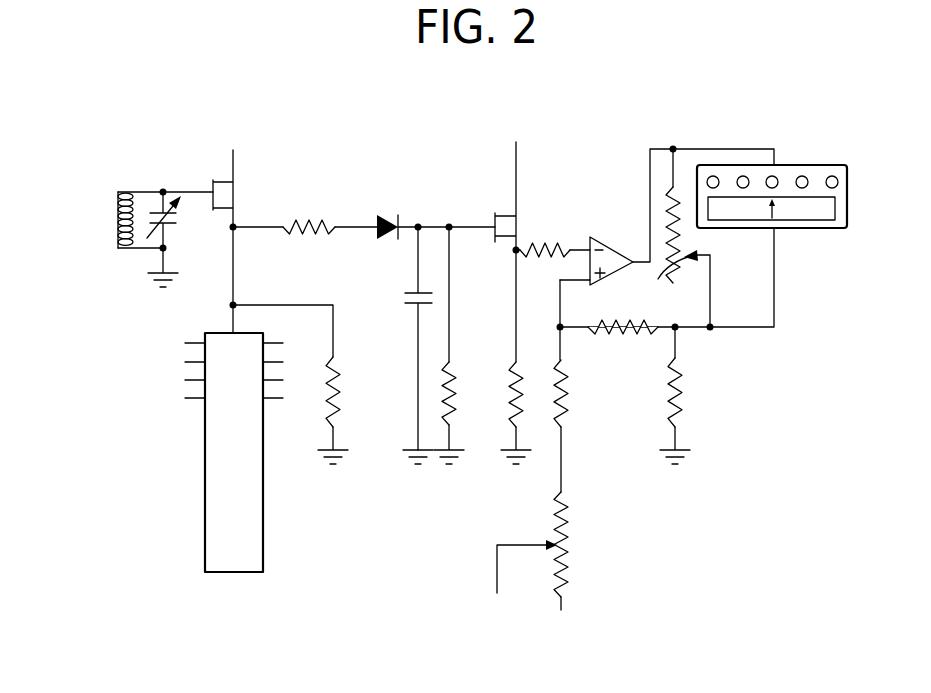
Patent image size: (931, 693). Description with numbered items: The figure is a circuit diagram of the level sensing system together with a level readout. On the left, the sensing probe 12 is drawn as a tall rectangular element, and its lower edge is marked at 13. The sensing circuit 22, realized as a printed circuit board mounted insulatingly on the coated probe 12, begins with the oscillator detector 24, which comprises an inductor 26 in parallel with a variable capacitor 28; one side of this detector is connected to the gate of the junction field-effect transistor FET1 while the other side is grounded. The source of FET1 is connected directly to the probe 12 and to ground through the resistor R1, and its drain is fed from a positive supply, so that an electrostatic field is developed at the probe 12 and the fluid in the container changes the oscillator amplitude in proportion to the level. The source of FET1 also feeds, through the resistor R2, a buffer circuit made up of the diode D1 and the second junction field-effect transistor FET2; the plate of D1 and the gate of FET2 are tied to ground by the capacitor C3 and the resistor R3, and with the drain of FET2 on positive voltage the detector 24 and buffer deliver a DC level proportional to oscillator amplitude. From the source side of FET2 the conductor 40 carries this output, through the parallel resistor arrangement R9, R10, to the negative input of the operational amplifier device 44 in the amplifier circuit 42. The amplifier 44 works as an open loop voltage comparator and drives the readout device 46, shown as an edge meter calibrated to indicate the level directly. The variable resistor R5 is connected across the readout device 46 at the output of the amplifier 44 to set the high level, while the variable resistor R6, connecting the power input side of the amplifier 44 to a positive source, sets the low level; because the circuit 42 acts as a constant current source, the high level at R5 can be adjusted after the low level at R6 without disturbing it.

The sensing probe 12 is at (196, 426).
The probe housing edge 13 is at (265, 532).
The sensing circuit 22 is at (378, 170).
The oscillator detector 24 is at (126, 176).
The inductor 26 is at (118, 243).
The variable capacitor 28 is at (172, 226).
The conductor 40 is at (525, 258).
The amplifier circuit 42 is at (662, 133).
The operational amplifier device 44 is at (611, 247).
The readout device 46 is at (795, 164).
The junction field-effect transistor FET1 is at (235, 200).
The junction field-effect transistor FET2 is at (500, 236).
The diode D1 is at (385, 213).
The capacitor C3 is at (412, 291).
The resistor R1 is at (346, 381).
The resistor R2 is at (305, 206).
The resistor R3 is at (452, 368).
The variable resistor R5 is at (673, 283).
The variable resistor R6 is at (572, 553).
The resistor R9 is at (545, 259).
The resistor R10 is at (514, 387).